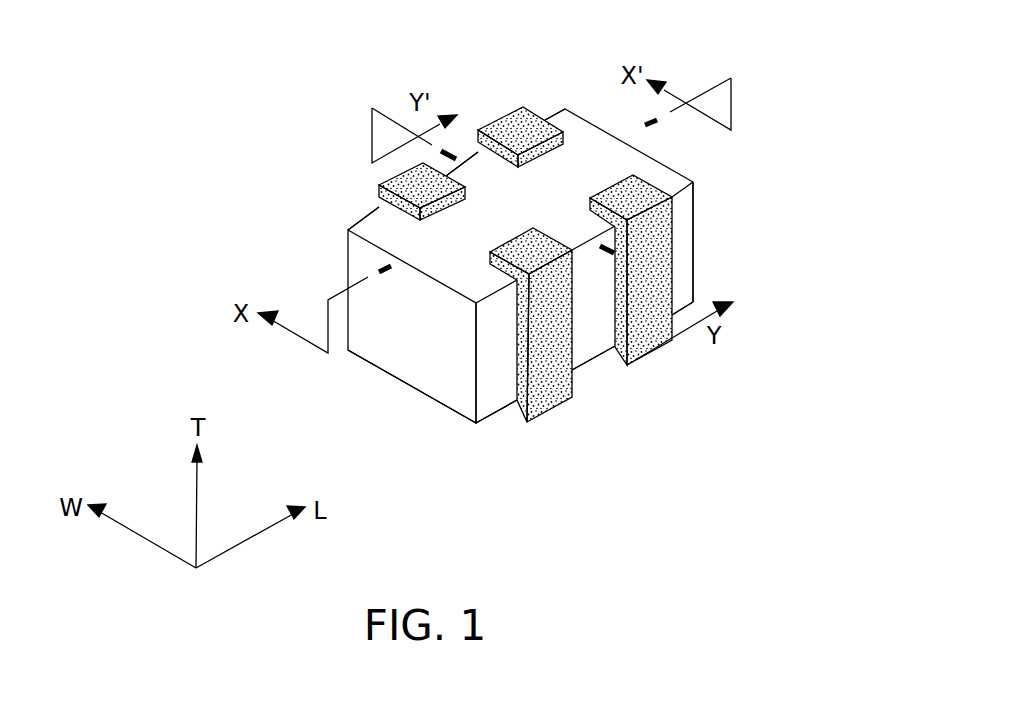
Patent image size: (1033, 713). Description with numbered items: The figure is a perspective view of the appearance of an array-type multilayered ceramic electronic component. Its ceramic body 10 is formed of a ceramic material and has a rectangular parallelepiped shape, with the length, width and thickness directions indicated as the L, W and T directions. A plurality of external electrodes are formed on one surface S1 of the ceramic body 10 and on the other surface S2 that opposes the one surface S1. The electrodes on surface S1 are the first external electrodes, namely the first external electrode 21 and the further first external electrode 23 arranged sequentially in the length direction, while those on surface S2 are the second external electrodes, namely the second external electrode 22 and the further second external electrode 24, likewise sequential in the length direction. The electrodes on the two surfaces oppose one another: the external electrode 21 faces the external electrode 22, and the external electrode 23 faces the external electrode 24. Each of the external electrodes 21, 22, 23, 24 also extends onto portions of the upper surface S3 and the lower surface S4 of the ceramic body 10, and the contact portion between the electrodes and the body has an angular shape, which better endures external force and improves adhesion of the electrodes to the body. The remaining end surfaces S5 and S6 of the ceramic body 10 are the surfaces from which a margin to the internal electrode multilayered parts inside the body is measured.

The ceramic body 10 is at (529, 281).
The 1-1st external electrode 21 is at (380, 182).
The 2-1st external electrode 22 is at (552, 385).
The 1-2nd external electrode 23 is at (512, 118).
The 2-2nd external electrode 24 is at (648, 335).
The one surface S1 is at (468, 165).
The other surface S2 is at (590, 333).
The upper surface S3 is at (580, 143).
The lower surface S4 is at (503, 417).
The surface S5 is at (407, 353).
The surface S6 is at (680, 168).